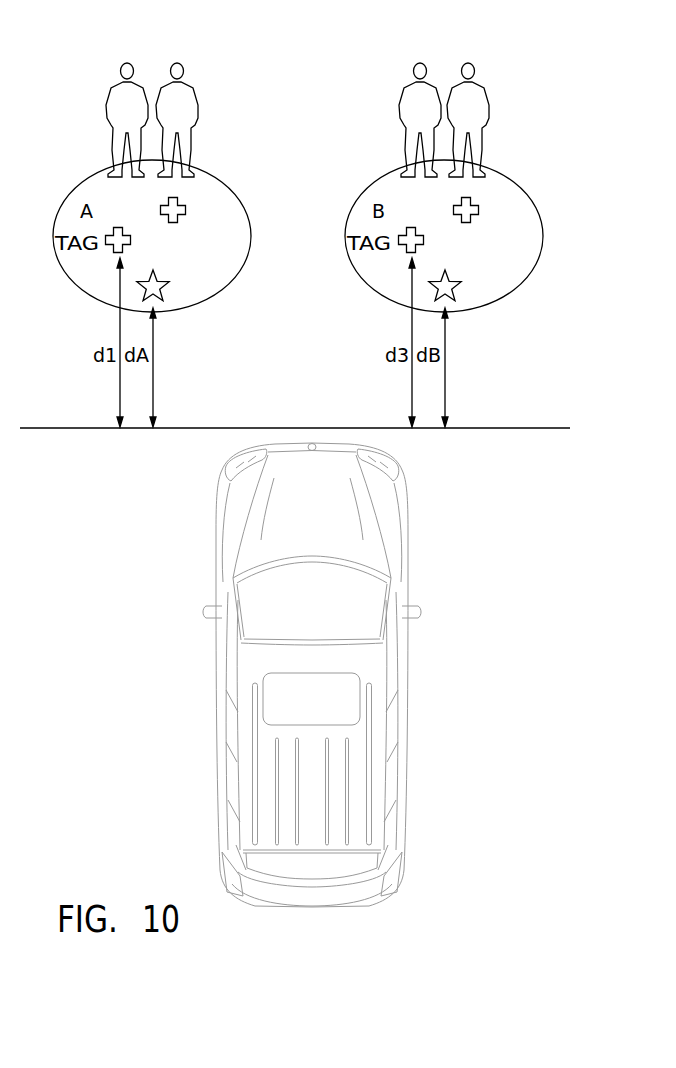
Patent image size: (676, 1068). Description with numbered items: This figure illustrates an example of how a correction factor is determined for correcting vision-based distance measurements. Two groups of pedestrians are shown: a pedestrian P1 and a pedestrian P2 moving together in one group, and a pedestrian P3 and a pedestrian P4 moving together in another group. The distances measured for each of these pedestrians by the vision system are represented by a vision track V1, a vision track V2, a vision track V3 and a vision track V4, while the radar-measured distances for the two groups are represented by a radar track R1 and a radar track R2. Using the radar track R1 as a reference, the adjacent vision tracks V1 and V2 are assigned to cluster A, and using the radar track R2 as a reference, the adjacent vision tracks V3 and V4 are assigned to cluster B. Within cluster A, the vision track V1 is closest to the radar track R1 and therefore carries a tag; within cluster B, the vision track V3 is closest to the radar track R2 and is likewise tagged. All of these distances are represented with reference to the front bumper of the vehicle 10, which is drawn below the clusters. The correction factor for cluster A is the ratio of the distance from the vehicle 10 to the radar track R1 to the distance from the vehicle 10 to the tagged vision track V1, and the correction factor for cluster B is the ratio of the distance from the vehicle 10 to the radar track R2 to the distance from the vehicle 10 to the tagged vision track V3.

The pedestrian P1 is at (126, 62).
The pedestrian P2 is at (176, 62).
The pedestrian P3 is at (419, 62).
The pedestrian P4 is at (467, 62).
The vision track V1 is at (114, 251).
The vision track V2 is at (186, 209).
The vision track V3 is at (407, 251).
The vision track V4 is at (479, 209).
The radar track R1 is at (165, 292).
The radar track R2 is at (457, 292).
The vehicle 10 is at (392, 519).